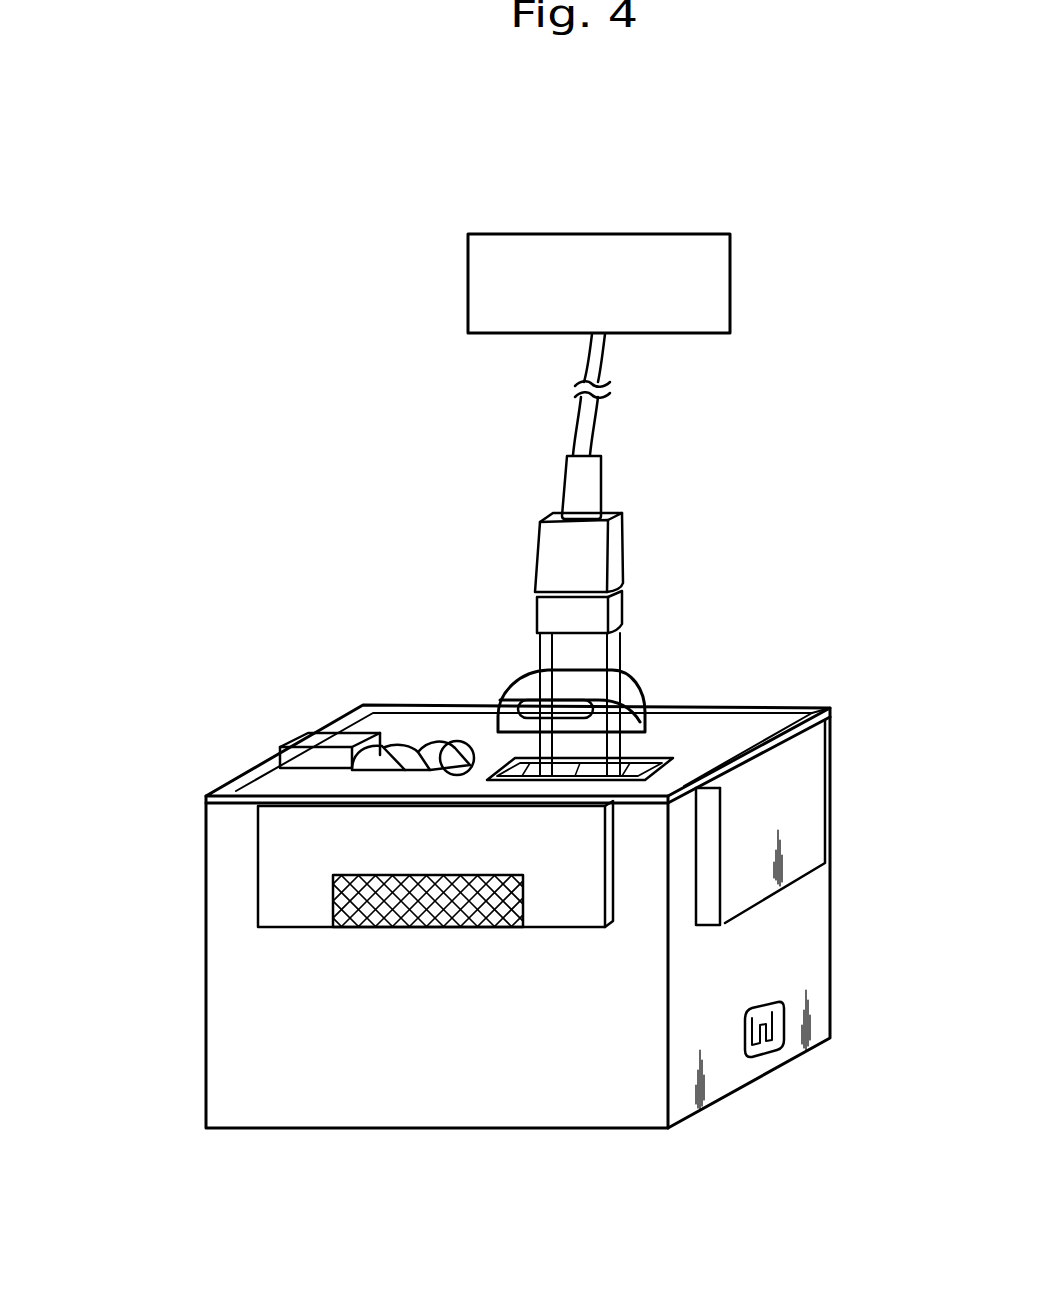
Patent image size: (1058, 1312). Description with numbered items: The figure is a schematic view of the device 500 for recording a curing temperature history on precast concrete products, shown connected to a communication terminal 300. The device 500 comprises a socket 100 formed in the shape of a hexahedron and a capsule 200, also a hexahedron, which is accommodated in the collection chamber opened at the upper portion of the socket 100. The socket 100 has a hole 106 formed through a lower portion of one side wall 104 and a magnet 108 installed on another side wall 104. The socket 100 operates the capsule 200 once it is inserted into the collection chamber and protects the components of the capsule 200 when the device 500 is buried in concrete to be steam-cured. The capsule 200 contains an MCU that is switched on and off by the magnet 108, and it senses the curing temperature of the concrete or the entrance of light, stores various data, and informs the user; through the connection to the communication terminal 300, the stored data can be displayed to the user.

The socket 100 is at (551, 940).
The side wall 104 is at (715, 1067).
The hole 106 is at (778, 1005).
The magnet 108 is at (428, 912).
The capsule 200 is at (735, 727).
The communication terminal 300 is at (731, 293).
The device for recording a curing temperature history 500 is at (167, 927).